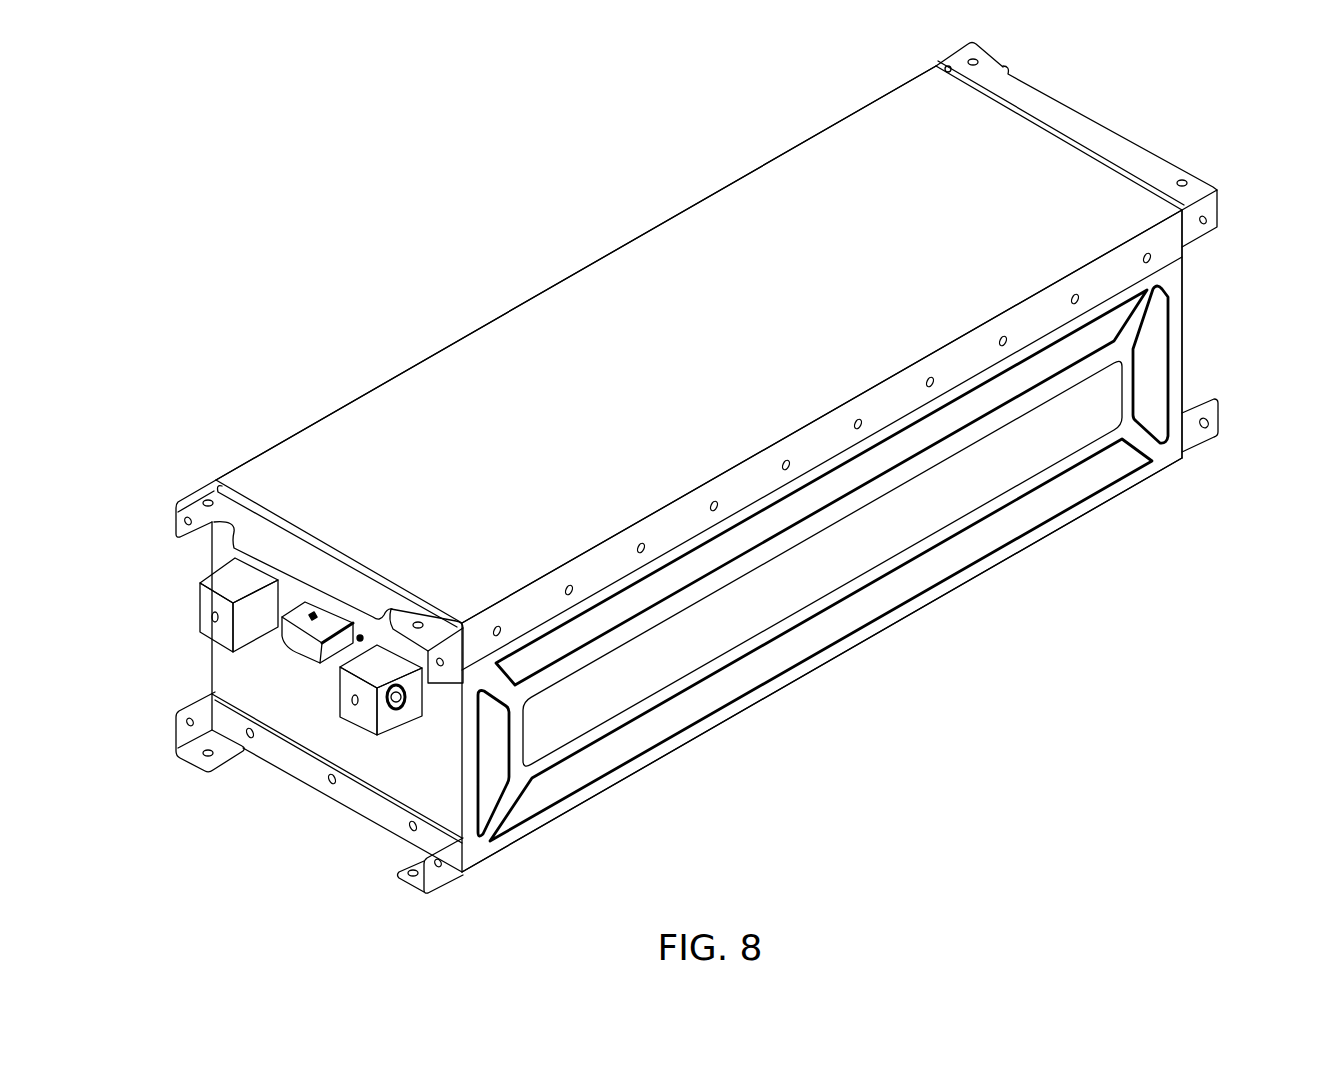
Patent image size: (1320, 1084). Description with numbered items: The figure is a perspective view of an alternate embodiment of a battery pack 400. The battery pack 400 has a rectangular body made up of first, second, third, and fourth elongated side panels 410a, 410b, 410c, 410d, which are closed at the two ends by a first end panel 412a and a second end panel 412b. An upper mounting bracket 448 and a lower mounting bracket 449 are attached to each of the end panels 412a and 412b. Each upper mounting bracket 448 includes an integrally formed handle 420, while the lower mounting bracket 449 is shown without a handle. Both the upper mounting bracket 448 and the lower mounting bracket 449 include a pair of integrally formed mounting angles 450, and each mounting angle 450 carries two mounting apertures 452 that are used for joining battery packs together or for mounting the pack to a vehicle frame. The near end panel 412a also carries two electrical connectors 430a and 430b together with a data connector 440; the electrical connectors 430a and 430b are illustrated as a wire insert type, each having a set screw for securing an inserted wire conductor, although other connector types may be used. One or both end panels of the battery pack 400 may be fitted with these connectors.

The battery pack 400 is at (228, 171).
The first elongated side panel 410a is at (667, 354).
The second elongated side panel 410b is at (798, 574).
The third elongated side panel 410c is at (821, 667).
The fourth elongated side panel 410d is at (574, 277).
The first end panel 412a is at (389, 769).
The second end panel 412b is at (1184, 329).
The handle 420 is at (1082, 120).
The electrical connector 430a is at (211, 618).
The electrical connector 430b is at (350, 700).
The data connector 440 is at (300, 644).
The upper mounting bracket 448 is at (1136, 171).
The lower mounting bracket 449 is at (352, 797).
The mounting angle 450 is at (960, 58).
The mounting aperture 452 is at (1181, 176).